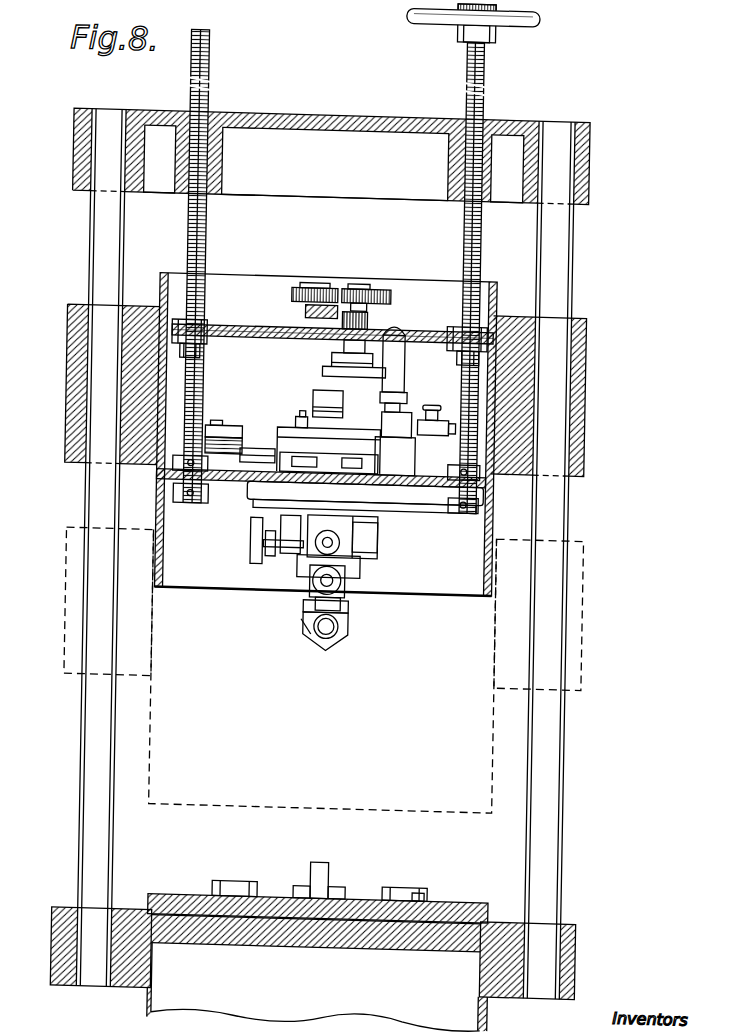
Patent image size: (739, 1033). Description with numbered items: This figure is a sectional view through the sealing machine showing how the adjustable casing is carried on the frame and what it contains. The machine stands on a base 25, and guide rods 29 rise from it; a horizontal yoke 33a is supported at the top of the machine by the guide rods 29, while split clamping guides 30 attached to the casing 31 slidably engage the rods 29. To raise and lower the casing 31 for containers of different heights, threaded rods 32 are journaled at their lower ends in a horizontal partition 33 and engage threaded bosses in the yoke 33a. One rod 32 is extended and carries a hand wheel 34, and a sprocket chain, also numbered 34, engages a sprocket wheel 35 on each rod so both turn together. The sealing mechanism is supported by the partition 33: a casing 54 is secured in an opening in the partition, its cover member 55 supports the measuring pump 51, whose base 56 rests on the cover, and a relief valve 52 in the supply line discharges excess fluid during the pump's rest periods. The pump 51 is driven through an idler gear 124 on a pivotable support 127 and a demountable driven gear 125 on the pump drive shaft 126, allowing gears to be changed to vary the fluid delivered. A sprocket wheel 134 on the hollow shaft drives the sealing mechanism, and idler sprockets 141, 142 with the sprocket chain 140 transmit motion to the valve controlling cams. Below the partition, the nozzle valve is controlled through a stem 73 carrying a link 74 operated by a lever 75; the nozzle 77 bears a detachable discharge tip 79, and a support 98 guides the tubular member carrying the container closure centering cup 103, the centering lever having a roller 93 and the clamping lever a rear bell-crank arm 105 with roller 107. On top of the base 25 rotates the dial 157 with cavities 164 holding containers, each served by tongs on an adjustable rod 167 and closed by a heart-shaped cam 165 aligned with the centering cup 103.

The base 25 is at (165, 1000).
The guide rods 29 is at (95, 256).
The split clamping guides 30 is at (73, 343).
The casing 31 is at (502, 268).
The threaded rods 32 is at (213, 70).
The horizontal partition 33 is at (448, 476).
The horizontal yoke 33a is at (387, 112).
The hand wheel 34 is at (530, 8).
The sprocket wheel 35 is at (213, 320).
The measuring pump 51 is at (348, 327).
The relief valve 52 is at (411, 360).
The casing 54 is at (440, 423).
The cover member 55 is at (310, 412).
The base of measuring pump 56 is at (322, 390).
The stem 73 is at (298, 546).
The link 74 is at (277, 540).
The lever 75 is at (260, 523).
The nozzle 77 is at (314, 600).
The discharge tip 79 is at (343, 628).
The roller 93 is at (351, 594).
The support 98 is at (355, 571).
The container closure centering cup 103 is at (359, 600).
The rear bell-crank arm 105 is at (387, 522).
The roller 107 is at (387, 535).
The idler gear 124 is at (302, 279).
The driven gear 125 is at (390, 279).
The drive shaft 126 is at (372, 297).
The support for idler gear 127 is at (311, 303).
The sprocket wheel 134 is at (355, 450).
The sprocket chain 140 is at (248, 447).
The idler sprocket 141 is at (240, 419).
The idler sprocket 142 is at (250, 436).
The dial 157 is at (401, 876).
The cavities 164 is at (246, 874).
The heart-shaped cam 165 is at (428, 881).
The rod 167 is at (337, 853).